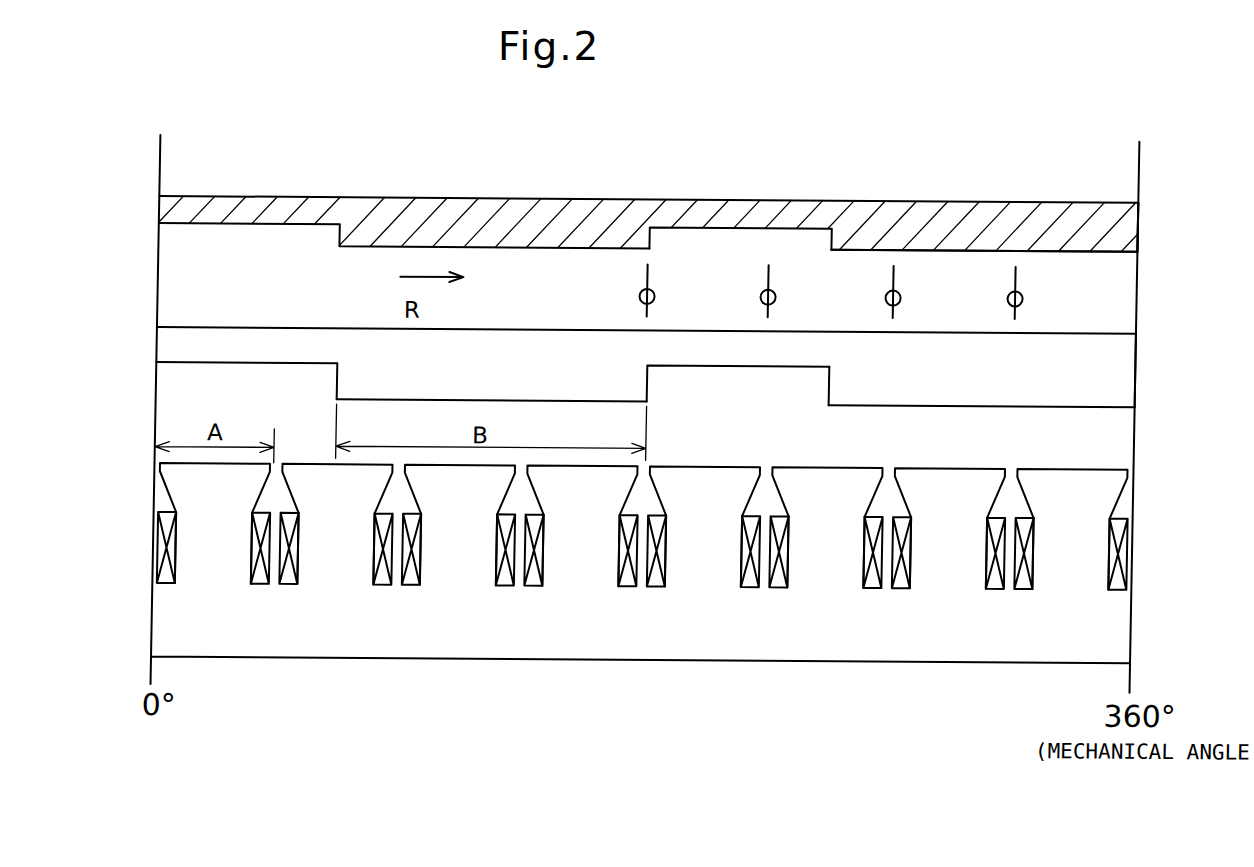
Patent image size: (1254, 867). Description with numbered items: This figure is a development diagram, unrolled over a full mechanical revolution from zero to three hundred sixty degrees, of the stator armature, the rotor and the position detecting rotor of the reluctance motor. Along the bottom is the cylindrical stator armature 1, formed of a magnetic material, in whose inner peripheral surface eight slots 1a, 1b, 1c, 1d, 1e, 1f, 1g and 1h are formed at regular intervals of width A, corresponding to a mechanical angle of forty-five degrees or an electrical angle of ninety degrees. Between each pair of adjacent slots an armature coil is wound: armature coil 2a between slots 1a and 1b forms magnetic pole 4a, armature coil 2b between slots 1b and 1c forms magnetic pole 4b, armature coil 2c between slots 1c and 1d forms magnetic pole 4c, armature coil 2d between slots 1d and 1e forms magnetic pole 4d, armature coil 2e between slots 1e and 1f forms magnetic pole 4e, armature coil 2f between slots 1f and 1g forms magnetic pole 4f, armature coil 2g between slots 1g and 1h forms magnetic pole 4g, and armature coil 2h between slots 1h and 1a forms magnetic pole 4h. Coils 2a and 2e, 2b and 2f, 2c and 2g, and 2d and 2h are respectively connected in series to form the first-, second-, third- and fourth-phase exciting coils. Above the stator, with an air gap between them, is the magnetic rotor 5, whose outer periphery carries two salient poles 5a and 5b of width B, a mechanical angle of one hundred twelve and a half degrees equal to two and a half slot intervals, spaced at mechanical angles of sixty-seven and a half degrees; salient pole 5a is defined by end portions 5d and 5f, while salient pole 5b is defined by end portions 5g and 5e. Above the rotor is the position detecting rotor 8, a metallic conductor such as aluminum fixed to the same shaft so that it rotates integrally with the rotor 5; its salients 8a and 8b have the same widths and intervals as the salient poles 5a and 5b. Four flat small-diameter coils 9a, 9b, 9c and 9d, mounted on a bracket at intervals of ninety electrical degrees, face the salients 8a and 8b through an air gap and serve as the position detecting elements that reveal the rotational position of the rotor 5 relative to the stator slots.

The stator armature 1 is at (318, 642).
The first slot 1a is at (213, 549).
The second slot 1b is at (332, 550).
The third slot 1c is at (454, 550).
The fourth slot 1d is at (577, 551).
The fifth slot 1e is at (699, 551).
The sixth slot 1f is at (822, 551).
The seventh slot 1g is at (944, 552).
The eighth slot 1h is at (1067, 552).
The armature coil 2a is at (170, 566).
The armature coil 2b is at (292, 565).
The armature coil 2c is at (415, 564).
The armature coil 2d is at (538, 563).
The armature coil 2e is at (660, 563).
The armature coil 2f is at (782, 562).
The armature coil 2g is at (905, 561).
The armature coil 2h is at (1028, 560).
The magnetic pole 4a is at (216, 477).
The magnetic pole 4b is at (338, 476).
The magnetic pole 4c is at (461, 475).
The magnetic pole 4d is at (584, 474).
The magnetic pole 4e is at (706, 474).
The magnetic pole 4f is at (828, 473).
The magnetic pole 4g is at (951, 472).
The magnetic pole 4h is at (1074, 471).
The magnetic rotor 5 is at (677, 358).
The salient pole 5a is at (988, 404).
The salient pole 5b is at (516, 398).
The end portion 5d is at (1134, 383).
The end portion 5e is at (645, 382).
The end portion 5f is at (825, 383).
The end portion 5g is at (334, 383).
The position detecting rotor 8 is at (663, 197).
The salient 8a is at (500, 241).
The salient 8b is at (971, 242).
The flat small-diameter coil 9a is at (652, 289).
The flat small-diameter coil 9b is at (773, 289).
The flat small-diameter coil 9c is at (898, 289).
The flat small-diameter coil 9d is at (1020, 289).